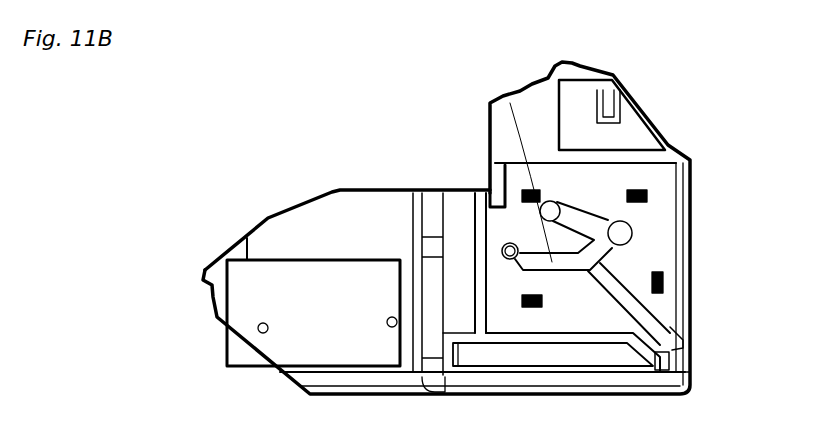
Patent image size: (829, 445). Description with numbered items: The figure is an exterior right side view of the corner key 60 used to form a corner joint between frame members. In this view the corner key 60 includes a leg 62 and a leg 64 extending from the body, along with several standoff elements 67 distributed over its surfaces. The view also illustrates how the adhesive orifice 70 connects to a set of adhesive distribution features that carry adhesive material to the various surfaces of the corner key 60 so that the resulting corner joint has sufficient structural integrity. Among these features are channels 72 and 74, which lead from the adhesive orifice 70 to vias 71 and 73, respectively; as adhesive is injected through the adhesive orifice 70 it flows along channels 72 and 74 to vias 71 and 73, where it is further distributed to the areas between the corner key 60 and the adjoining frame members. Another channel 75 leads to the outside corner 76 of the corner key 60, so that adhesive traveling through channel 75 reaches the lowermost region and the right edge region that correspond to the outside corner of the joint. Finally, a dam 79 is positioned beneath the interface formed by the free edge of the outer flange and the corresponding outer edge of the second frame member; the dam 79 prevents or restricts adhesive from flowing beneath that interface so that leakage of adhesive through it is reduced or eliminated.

The corner key 60 is at (298, 152).
The leg 62 is at (260, 355).
The leg 64 is at (637, 93).
The standoff elements 67 is at (530, 190).
The adhesive orifice 70 is at (627, 237).
The via 71 is at (555, 200).
The channel 72 is at (590, 223).
The via 73 is at (490, 205).
The channel 74 is at (507, 243).
The channel 75 is at (653, 331).
The outside corner 76 is at (690, 368).
The dam 79 is at (475, 300).